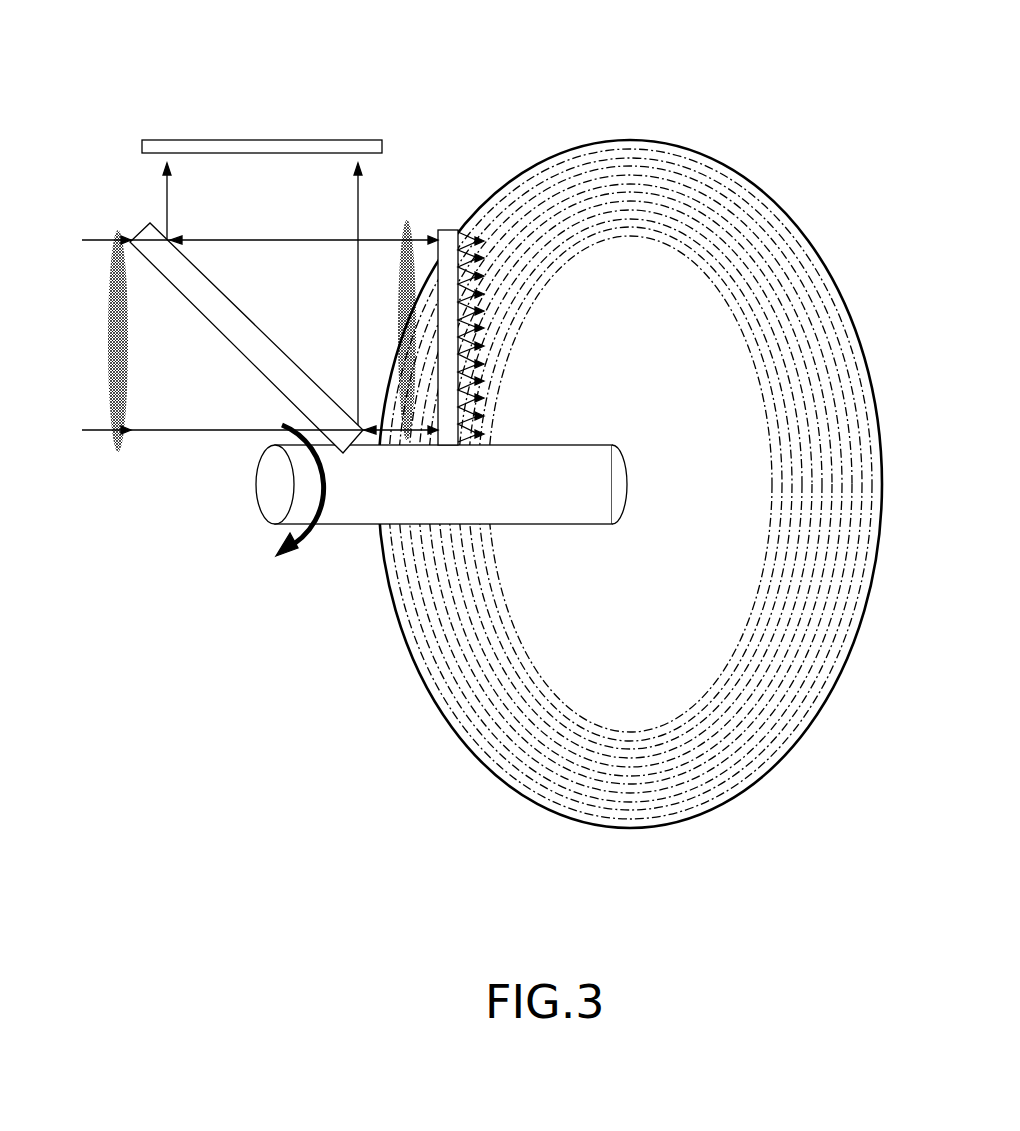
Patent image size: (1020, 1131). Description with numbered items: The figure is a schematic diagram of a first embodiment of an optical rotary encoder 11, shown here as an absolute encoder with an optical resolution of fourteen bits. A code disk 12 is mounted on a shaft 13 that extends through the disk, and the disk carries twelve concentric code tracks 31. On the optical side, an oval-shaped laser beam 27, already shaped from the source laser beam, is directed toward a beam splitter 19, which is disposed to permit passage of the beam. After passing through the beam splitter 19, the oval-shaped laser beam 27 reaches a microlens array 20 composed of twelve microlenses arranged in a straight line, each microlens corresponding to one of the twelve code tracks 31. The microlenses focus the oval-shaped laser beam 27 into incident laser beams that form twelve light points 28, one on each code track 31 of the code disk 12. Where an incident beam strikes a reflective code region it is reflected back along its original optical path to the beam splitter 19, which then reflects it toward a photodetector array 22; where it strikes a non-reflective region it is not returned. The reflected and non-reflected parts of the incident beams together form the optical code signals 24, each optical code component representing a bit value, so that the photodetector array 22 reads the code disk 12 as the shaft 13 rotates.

The optical rotary encoder 11 is at (115, 82).
The code disk 12 is at (755, 186).
The shaft 13 is at (355, 528).
The beam splitter 19 is at (207, 318).
The microlens array 20 is at (450, 230).
The photodetector array 22 is at (263, 140).
The optical code signals 24 is at (386, 178).
The oval-shaped laser beam 27 is at (95, 333).
The light points 28 is at (506, 362).
The code tracks 31 is at (621, 150).